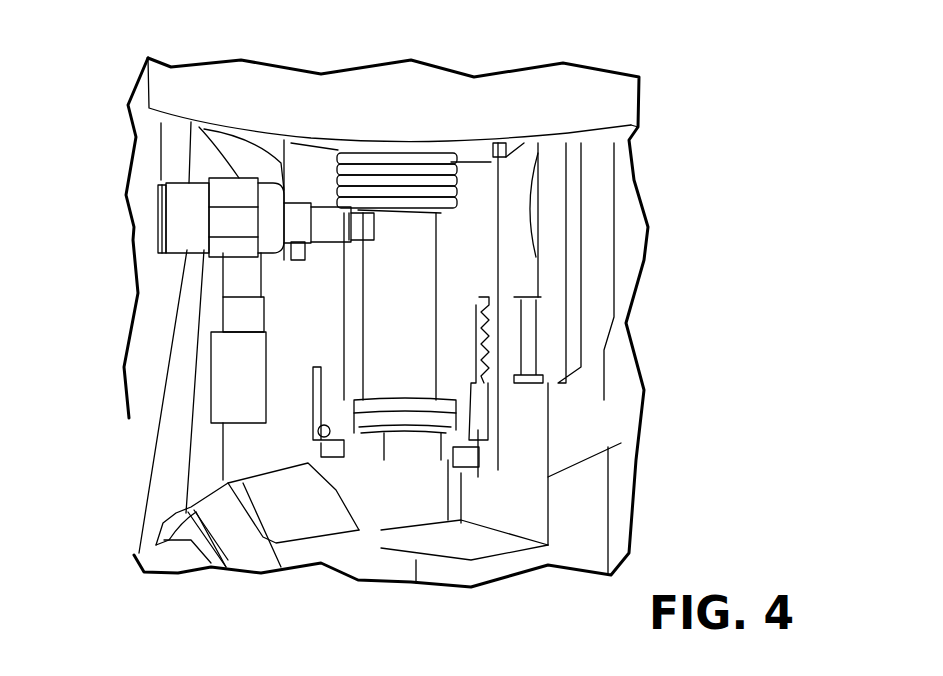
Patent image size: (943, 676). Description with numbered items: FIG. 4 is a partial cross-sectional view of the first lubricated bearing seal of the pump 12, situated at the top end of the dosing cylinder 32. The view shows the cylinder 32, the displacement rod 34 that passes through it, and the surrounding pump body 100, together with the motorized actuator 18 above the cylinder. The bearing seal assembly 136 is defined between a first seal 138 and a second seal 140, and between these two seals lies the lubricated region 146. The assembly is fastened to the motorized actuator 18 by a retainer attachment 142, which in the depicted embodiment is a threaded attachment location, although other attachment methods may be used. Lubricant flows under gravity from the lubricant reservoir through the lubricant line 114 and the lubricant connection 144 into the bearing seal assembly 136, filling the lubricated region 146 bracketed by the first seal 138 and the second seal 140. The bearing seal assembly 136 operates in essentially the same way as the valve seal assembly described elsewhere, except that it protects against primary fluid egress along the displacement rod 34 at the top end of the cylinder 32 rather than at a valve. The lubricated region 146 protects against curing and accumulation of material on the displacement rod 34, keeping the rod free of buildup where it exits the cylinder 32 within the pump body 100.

The assembly 12 is at (708, 91).
The motorized actuator 18 is at (610, 98).
The cylinder 32 is at (520, 497).
The displacement rod 34 is at (410, 505).
The pump body 100 is at (607, 405).
The lubricant line 114 is at (133, 208).
The bearing seal assembly 136 is at (420, 320).
The first seal 138 is at (408, 220).
The second seal 140 is at (433, 417).
The retainer attachment 142 is at (452, 192).
The lubricant connection 144 is at (190, 230).
The lubricated region 146 is at (387, 302).